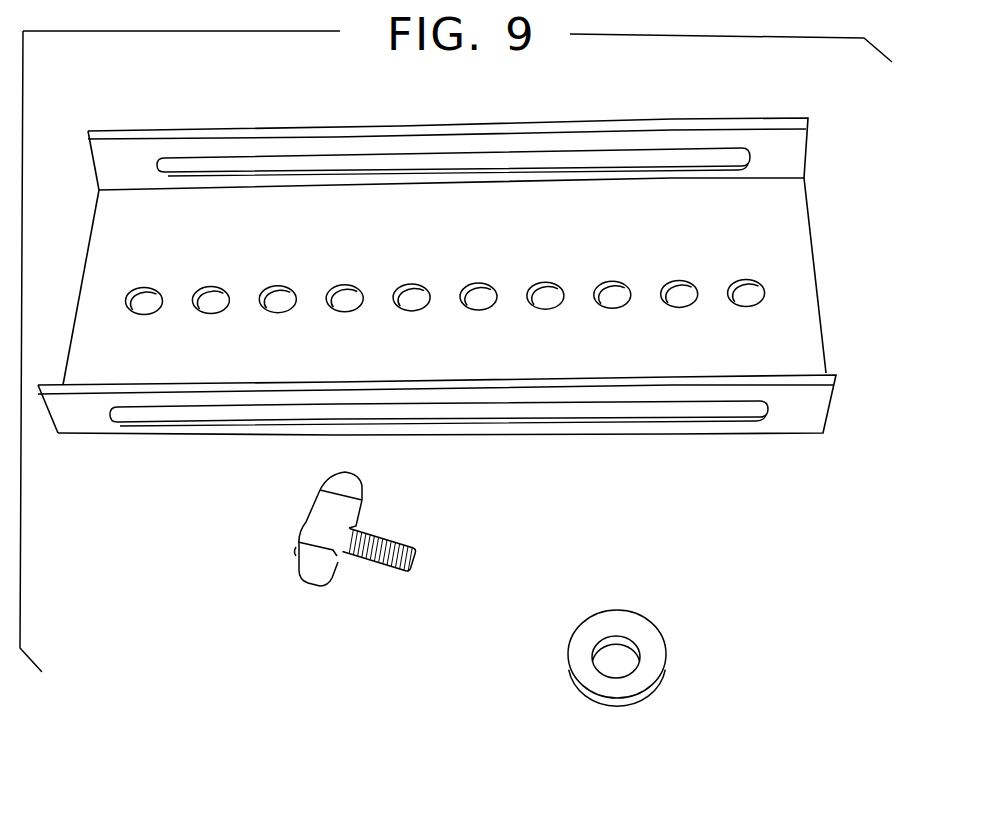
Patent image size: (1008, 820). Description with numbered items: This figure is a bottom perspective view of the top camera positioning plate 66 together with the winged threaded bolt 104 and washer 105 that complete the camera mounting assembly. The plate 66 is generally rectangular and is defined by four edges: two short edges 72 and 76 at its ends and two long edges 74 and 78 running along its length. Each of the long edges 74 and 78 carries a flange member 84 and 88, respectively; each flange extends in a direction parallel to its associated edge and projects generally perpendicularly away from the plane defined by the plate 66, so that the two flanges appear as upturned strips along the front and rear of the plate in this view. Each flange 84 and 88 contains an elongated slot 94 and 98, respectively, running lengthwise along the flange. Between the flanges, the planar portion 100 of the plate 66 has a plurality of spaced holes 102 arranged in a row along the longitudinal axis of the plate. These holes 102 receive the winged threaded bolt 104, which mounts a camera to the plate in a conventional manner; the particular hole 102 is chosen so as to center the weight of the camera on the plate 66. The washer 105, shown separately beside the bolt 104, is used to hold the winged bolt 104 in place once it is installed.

The top camera positioning plate 66 is at (782, 200).
The short edge 72 is at (806, 228).
The long edge 74 is at (372, 433).
The short edge 76 is at (80, 291).
The long edge 78 is at (338, 140).
The flange member 84 is at (47, 418).
The flange member 88 is at (93, 163).
The elongated slot 94 is at (628, 410).
The elongated slot 98 is at (675, 120).
The planar portion 100 is at (752, 342).
The spaced holes 102 is at (748, 292).
The winged threaded bolt 104 is at (343, 548).
The washer 105 is at (598, 628).